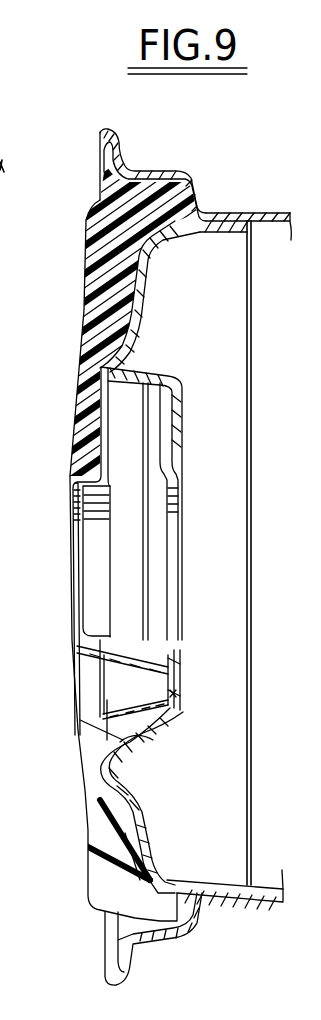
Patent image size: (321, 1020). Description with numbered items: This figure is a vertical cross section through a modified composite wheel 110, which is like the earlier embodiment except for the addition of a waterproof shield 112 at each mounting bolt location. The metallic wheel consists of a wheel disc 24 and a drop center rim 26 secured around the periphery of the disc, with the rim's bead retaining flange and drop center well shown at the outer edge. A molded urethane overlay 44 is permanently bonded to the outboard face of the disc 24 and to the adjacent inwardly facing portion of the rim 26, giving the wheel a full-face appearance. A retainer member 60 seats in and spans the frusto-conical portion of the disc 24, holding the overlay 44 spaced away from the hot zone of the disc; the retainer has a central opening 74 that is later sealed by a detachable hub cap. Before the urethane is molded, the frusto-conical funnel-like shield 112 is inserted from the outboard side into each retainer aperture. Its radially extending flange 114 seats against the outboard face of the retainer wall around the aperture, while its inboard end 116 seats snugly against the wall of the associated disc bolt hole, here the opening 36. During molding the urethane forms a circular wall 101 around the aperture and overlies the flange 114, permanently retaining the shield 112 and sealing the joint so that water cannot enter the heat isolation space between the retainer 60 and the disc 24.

The composite wheel 110 is at (79, 153).
The drop center rim 26 is at (232, 208).
The wheel disc 24 is at (250, 367).
The overlay 44 is at (84, 258).
The retainer central opening 74 is at (80, 527).
The retainer member 60 is at (152, 543).
The circular wall 101 is at (93, 659).
The inboard end 116 is at (180, 672).
The opening 36 is at (177, 693).
The waterproof shield 112 is at (100, 691).
The flange 114 is at (100, 720).